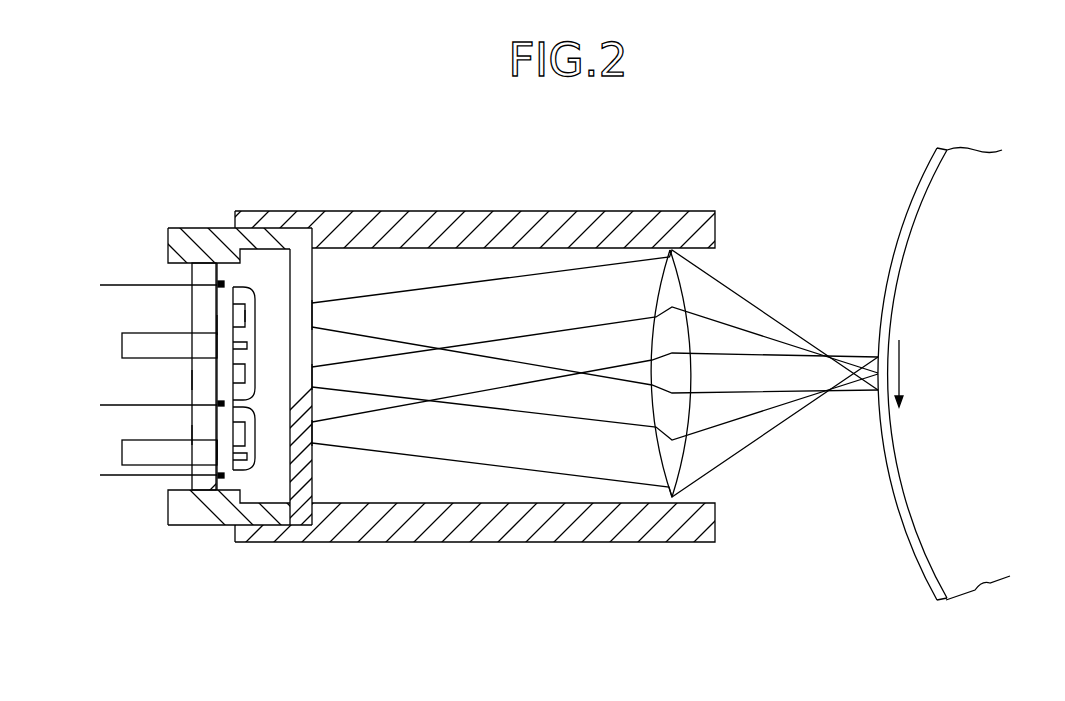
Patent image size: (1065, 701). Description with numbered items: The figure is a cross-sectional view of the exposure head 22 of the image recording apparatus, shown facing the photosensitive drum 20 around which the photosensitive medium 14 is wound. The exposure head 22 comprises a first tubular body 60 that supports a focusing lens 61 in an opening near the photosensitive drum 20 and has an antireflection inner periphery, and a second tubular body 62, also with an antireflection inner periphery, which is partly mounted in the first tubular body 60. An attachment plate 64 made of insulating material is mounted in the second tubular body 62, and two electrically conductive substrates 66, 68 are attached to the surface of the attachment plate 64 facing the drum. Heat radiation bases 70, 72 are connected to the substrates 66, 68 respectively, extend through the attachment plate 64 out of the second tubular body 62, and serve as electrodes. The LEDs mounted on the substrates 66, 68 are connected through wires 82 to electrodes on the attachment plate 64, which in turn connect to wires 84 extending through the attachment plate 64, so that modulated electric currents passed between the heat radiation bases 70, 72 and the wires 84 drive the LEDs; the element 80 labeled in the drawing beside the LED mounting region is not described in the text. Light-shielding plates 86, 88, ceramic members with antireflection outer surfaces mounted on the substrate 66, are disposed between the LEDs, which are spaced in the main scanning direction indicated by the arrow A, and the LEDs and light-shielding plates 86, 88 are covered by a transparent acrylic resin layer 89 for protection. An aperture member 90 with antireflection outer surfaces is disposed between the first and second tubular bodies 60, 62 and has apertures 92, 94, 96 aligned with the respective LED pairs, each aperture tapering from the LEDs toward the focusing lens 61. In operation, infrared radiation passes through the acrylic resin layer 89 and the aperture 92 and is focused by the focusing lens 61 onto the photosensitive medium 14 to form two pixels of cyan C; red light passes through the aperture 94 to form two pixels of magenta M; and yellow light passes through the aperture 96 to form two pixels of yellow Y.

The exposure head 22 is at (473, 192).
The first tubular body 60 is at (425, 228).
The aperture member 90 is at (314, 494).
The second tubular body 62 is at (178, 240).
The attachment plate 64 is at (200, 490).
The aperture 92 is at (310, 308).
The aperture 94 is at (314, 380).
The aperture 96 is at (314, 444).
The wires 84 is at (110, 283).
The heat radiation base 70 is at (122, 348).
The heat radiation base 72 is at (122, 450).
The electrically conductive substrate 66 is at (227, 326).
The electrically conductive substrate 68 is at (228, 448).
The light-shielding plate 86 is at (235, 343).
The light-shielding plate 88 is at (237, 393).
The circuit board 80 is at (218, 283).
The wires 82 is at (250, 288).
The transparent acrylic resin layer 89 is at (252, 301).
The focusing lens 61 is at (674, 477).
The cyan / auxiliary scanning direction C is at (764, 310).
The magenta M is at (787, 340).
The yellow Y is at (789, 427).
The photosensitive medium 14 is at (930, 583).
The photosensitive drum 20 is at (982, 576).
The main scanning direction A is at (901, 386).